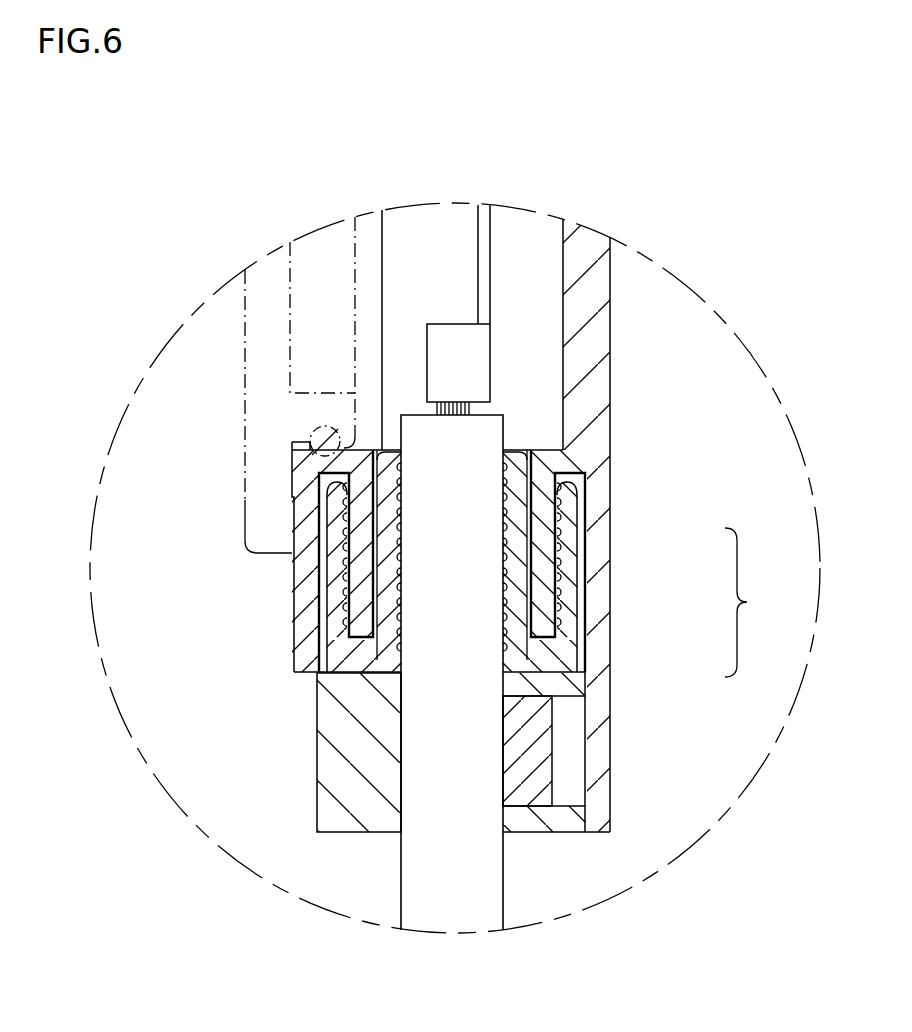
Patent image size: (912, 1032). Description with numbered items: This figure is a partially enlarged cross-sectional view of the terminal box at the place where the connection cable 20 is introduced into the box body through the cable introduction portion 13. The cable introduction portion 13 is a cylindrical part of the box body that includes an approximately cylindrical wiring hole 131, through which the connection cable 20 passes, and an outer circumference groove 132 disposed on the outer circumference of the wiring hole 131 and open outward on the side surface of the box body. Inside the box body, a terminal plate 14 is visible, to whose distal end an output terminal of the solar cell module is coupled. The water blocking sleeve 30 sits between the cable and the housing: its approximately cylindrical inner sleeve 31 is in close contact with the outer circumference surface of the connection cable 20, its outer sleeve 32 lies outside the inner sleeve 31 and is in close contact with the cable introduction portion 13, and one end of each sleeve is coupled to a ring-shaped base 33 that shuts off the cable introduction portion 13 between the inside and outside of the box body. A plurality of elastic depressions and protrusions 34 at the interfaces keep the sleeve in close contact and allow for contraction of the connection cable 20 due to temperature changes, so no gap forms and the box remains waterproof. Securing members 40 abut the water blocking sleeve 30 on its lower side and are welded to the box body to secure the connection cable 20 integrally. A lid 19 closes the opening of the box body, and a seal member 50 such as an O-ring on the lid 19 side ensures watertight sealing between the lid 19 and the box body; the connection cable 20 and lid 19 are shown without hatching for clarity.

The cable introduction portion 13 is at (283, 595).
The wiring hole 131 is at (528, 455).
The outer circumference groove 132 is at (583, 508).
The terminal plate 14 is at (485, 222).
The lid 19 is at (262, 391).
The connection cable 20 is at (488, 883).
The water blocking sleeve 30 is at (555, 564).
The inner sleeve 31 is at (515, 557).
The outer sleeve 32 is at (565, 572).
The base 33 is at (552, 655).
The depressions and protrusions 34 is at (388, 640).
The securing member 40 is at (333, 760).
The seal member 50 is at (293, 463).